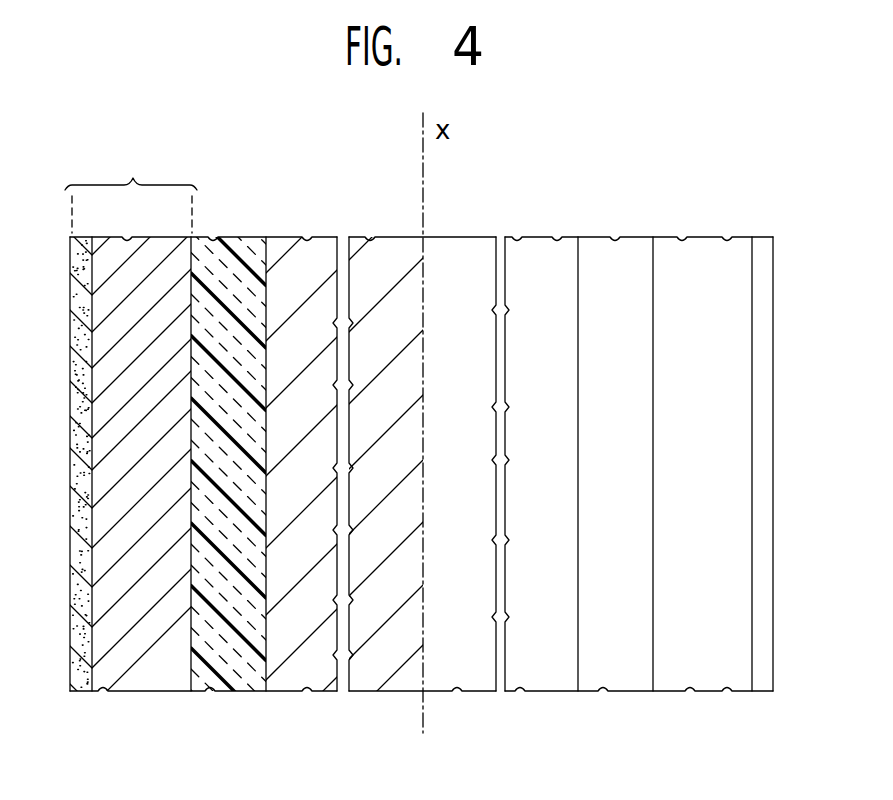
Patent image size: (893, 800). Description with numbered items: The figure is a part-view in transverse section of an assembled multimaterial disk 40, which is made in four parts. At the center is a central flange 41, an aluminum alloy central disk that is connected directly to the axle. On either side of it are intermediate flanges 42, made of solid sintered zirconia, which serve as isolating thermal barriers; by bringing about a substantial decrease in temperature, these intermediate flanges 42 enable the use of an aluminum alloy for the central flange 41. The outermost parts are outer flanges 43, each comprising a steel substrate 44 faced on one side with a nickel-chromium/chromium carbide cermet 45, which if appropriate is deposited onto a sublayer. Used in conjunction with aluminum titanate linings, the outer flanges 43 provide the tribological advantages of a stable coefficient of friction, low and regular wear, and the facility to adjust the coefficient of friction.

The multimaterial disk 40 is at (618, 213).
The central flange 41 is at (305, 667).
The intermediate flange 42 is at (231, 655).
The outer flange 43 is at (131, 185).
The steel substrate 44 is at (148, 665).
The nickel-chromium/chromium carbide cermet 45 is at (80, 676).